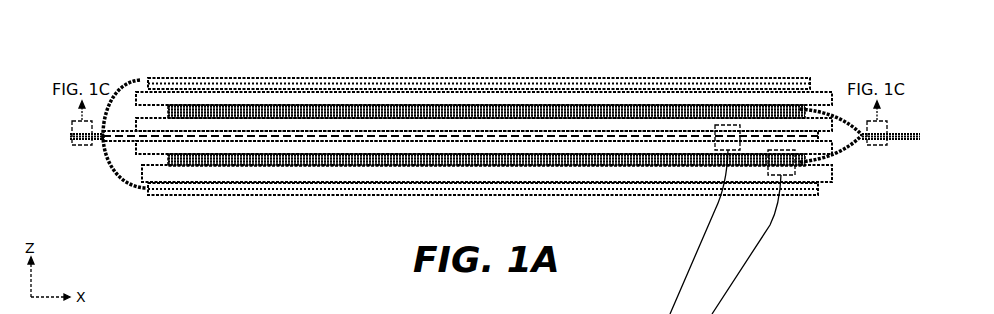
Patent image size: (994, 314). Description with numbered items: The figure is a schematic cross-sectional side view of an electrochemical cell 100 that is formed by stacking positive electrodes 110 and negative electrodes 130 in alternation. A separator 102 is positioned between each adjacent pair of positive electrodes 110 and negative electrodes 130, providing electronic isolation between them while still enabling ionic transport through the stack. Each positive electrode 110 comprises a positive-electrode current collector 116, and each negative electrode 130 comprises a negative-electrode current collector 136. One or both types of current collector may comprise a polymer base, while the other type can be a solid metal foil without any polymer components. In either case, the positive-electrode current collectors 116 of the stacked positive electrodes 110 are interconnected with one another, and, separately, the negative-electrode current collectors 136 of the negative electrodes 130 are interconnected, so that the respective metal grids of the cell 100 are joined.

The electrochemical cell 100 is at (90, 68).
The separator 102 is at (143, 179).
The positive electrode 110 is at (218, 164).
The negative electrode 130 is at (165, 196).
The negative-electrode current collector 136 is at (113, 168).
The positive-electrode current collector 116 is at (845, 156).